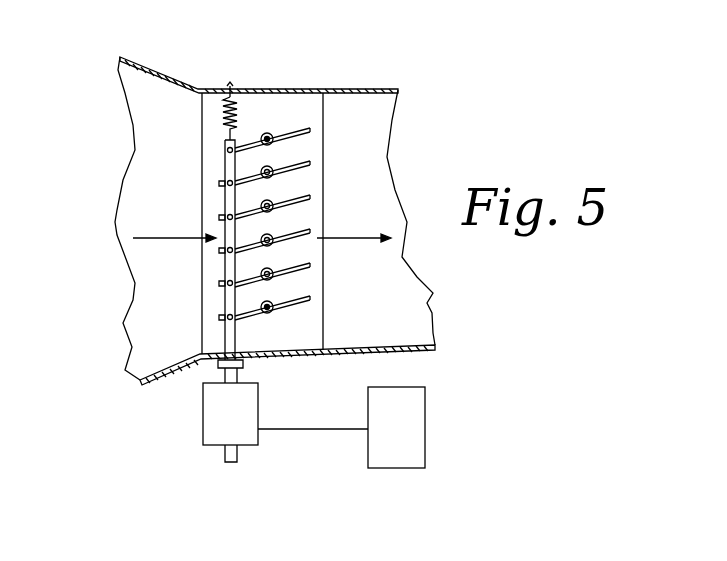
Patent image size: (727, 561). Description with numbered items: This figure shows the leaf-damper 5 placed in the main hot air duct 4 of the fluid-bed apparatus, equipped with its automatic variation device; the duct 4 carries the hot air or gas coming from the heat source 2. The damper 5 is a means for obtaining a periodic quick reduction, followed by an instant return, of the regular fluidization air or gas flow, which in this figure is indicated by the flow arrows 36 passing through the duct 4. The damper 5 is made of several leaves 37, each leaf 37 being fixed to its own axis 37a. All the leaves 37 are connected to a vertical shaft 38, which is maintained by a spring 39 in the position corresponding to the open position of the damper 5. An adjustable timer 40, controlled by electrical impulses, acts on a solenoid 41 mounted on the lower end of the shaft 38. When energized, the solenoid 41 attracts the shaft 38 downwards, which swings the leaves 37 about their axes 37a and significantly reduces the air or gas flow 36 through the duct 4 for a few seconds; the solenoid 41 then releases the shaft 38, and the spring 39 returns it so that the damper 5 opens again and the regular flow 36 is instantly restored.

The heat source 2 is at (153, 90).
The main hot air duct 4 is at (423, 300).
The leaf-damper 5 is at (427, 142).
The air flow 36 is at (170, 213).
The leaf 37 is at (300, 305).
The axis 37a is at (270, 170).
The vertical shaft 38 is at (228, 167).
The spring 39 is at (240, 110).
The adjustable timer 40 is at (417, 407).
The solenoid 41 is at (212, 411).